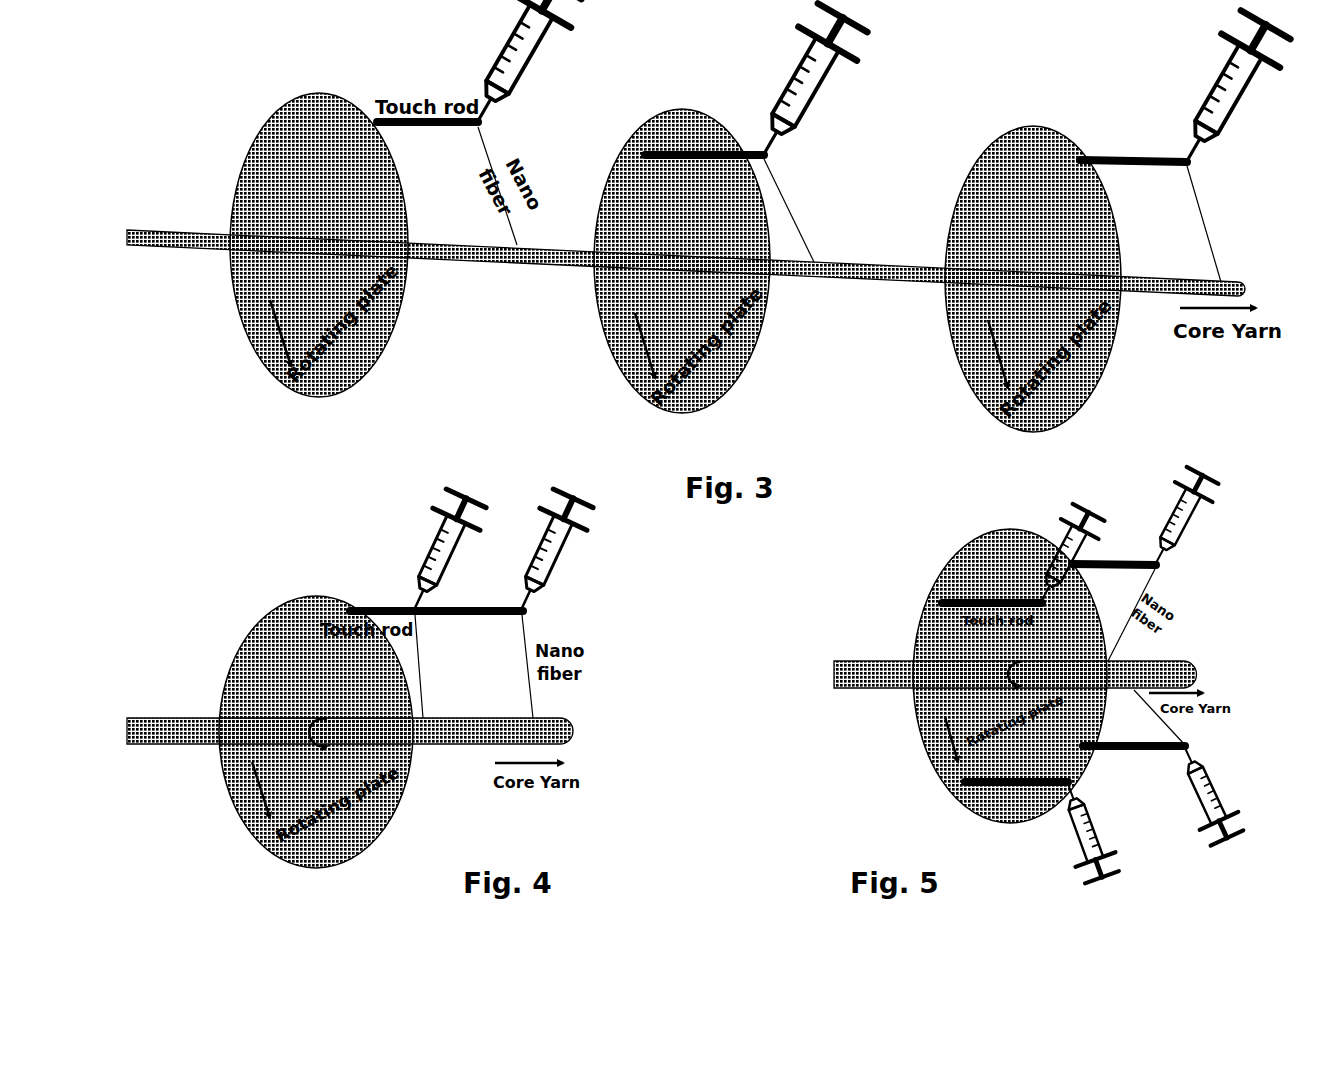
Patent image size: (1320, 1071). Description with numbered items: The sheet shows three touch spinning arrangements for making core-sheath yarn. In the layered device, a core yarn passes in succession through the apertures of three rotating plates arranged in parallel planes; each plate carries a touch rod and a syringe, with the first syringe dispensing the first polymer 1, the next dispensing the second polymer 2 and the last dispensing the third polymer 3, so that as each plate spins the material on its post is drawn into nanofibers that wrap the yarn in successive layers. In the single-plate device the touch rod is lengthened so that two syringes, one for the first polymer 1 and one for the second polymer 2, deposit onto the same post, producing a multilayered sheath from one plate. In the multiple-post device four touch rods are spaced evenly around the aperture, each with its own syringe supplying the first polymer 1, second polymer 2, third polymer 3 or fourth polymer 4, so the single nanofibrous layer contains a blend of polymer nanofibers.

In FIG. 3, the first polymer 1 is at (485, 69).
In FIG. 4, the first polymer 1 is at (407, 553).
In FIG. 5, the first polymer 1 is at (1065, 550).
In FIG. 3, the second polymer 2 is at (770, 86).
In FIG. 4, the second polymer 2 is at (594, 553).
In FIG. 5, the second polymer 2 is at (1191, 514).
In FIG. 3, the third polymer 3 is at (1194, 93).
In FIG. 5, the third polymer 3 is at (1230, 810).
In FIG. 5, the fourth polymer 4 is at (1119, 837).